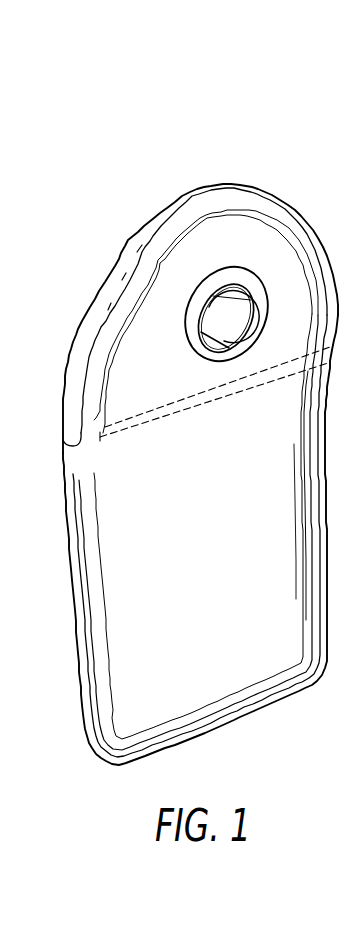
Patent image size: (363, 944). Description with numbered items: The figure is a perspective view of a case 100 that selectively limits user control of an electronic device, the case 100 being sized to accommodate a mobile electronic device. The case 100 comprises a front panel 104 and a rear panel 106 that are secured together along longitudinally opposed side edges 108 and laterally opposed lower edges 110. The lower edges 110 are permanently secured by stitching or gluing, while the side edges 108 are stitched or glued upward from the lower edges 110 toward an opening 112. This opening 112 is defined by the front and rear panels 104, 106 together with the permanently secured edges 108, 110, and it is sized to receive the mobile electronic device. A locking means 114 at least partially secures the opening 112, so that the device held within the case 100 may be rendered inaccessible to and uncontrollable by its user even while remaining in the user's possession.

The case 100 is at (234, 84).
The front panel 104 is at (233, 527).
The rear panel 106 is at (133, 235).
The side edges 108 is at (88, 512).
The lower edges 110 is at (227, 742).
The opening 112 is at (80, 408).
The locking means 114 is at (182, 364).